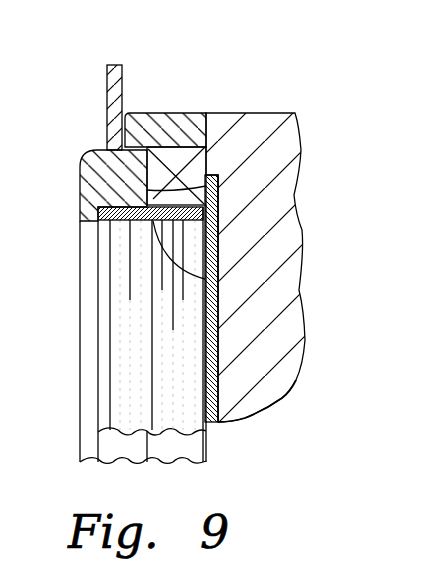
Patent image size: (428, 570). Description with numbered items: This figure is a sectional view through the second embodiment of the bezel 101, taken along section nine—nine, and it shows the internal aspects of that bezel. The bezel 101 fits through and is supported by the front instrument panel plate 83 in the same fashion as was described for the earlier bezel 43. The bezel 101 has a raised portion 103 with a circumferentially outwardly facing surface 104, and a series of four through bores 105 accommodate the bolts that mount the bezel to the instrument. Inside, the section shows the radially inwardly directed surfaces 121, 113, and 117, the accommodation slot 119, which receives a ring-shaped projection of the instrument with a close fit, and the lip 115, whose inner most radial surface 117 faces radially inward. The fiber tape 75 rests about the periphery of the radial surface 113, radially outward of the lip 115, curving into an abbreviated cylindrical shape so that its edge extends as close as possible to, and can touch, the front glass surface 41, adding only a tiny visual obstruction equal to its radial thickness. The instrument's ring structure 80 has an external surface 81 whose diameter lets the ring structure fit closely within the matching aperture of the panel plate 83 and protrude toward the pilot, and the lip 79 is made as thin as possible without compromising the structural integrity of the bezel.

The through bores 105 is at (17, 49).
The front instrument panel plate 83 is at (106, 88).
The bezel 101 is at (182, 96).
The bezel 43 is at (265, 112).
The front glass surface 41 is at (218, 333).
The external surface 81 is at (148, 162).
The circumferentially outwardly facing surface 104 is at (102, 151).
The radially inwardly directed surface 121 is at (190, 205).
The accommodation slot 119 is at (217, 184).
The ring structure 80 is at (218, 234).
The radial surface 113 is at (218, 278).
The raised portion 103 is at (80, 202).
The inner most radial surface 117 is at (90, 313).
The lip 79 is at (103, 447).
The fiber tape 75 is at (116, 363).
The lip 115 is at (100, 215).